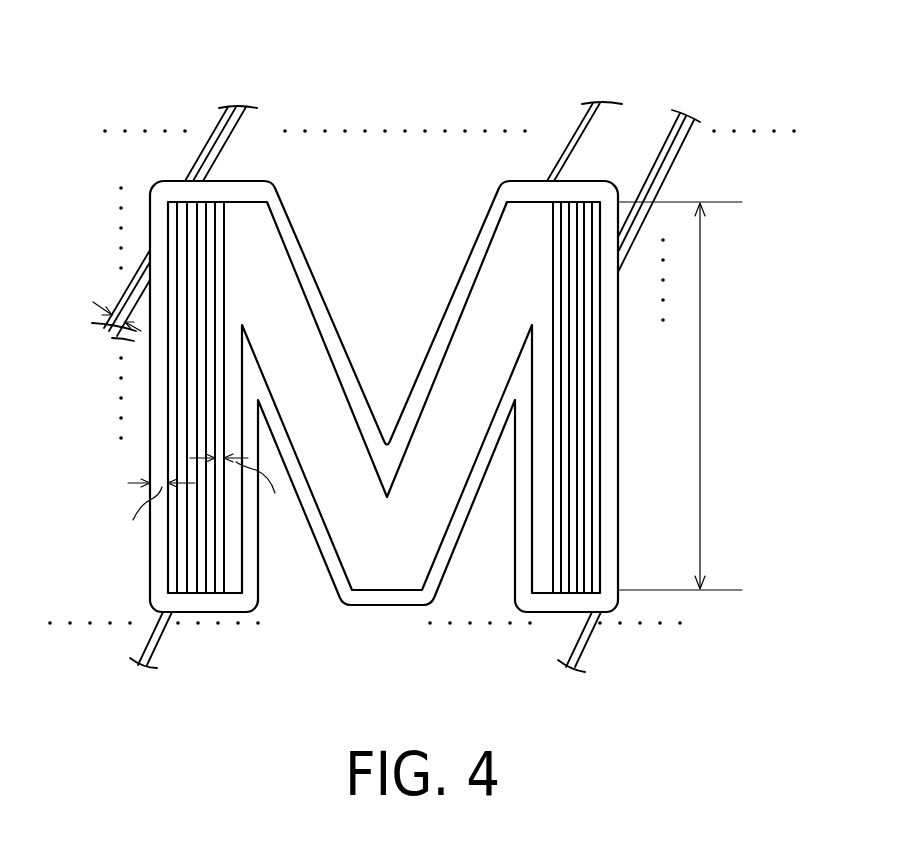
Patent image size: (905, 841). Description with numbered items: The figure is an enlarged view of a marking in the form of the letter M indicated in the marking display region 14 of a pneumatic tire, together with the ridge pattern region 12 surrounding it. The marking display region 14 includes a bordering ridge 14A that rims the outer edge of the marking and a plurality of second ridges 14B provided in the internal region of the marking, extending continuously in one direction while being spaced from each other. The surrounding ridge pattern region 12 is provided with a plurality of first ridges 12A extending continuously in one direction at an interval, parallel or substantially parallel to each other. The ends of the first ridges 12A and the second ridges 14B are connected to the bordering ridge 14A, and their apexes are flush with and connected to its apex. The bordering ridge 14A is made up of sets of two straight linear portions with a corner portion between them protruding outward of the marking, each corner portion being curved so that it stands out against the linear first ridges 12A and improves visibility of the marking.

The ridge pattern region 12 is at (665, 70).
The first ridges 12A is at (236, 106).
The marking display region 14 is at (398, 526).
The bordering ridge 14A is at (514, 193).
The second ridges 14B is at (182, 215).